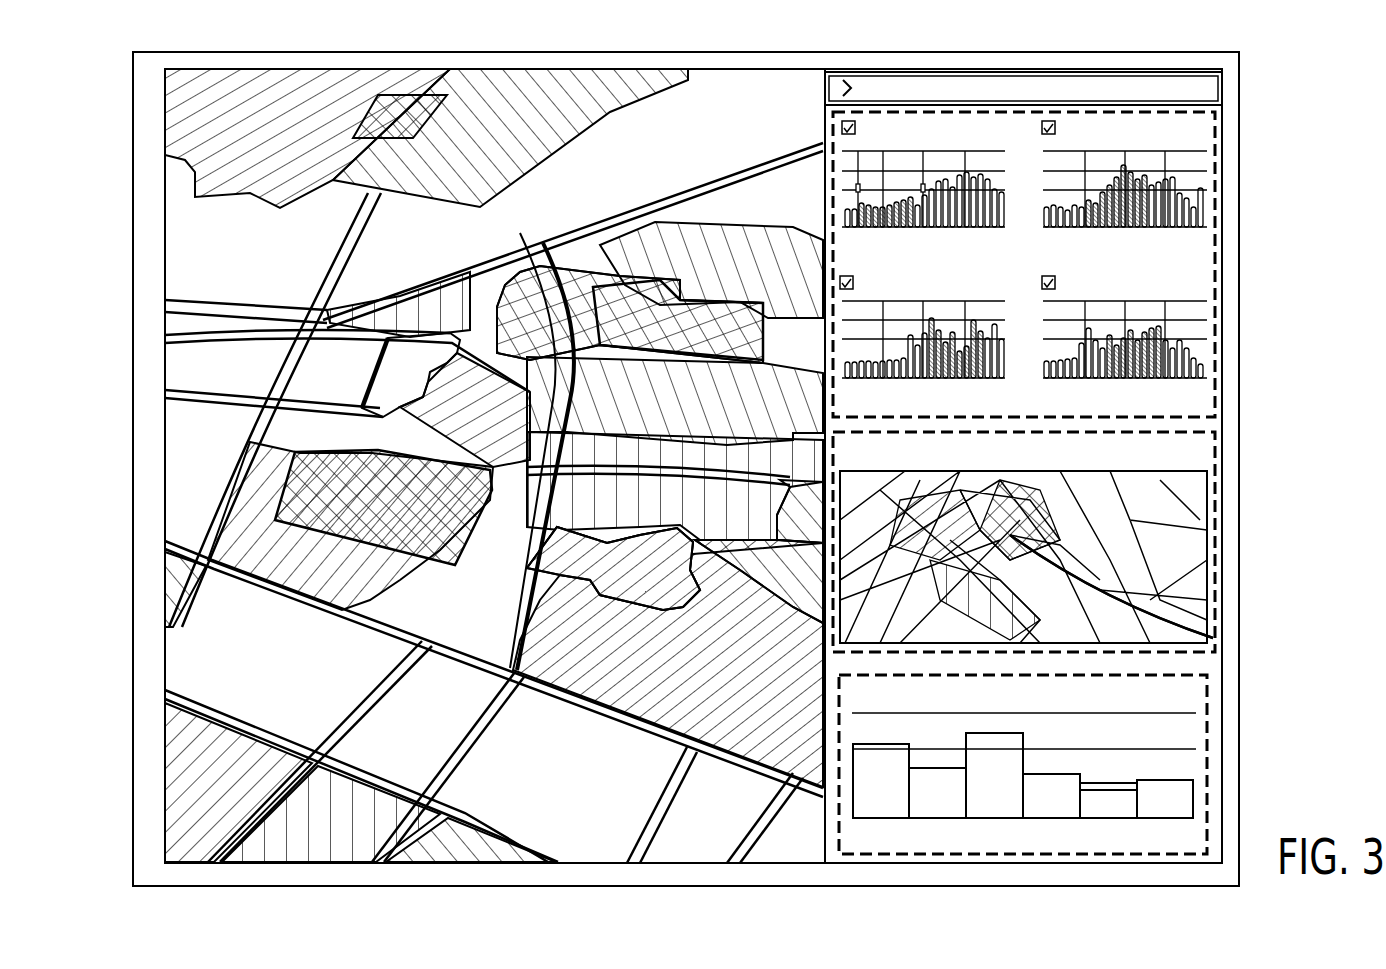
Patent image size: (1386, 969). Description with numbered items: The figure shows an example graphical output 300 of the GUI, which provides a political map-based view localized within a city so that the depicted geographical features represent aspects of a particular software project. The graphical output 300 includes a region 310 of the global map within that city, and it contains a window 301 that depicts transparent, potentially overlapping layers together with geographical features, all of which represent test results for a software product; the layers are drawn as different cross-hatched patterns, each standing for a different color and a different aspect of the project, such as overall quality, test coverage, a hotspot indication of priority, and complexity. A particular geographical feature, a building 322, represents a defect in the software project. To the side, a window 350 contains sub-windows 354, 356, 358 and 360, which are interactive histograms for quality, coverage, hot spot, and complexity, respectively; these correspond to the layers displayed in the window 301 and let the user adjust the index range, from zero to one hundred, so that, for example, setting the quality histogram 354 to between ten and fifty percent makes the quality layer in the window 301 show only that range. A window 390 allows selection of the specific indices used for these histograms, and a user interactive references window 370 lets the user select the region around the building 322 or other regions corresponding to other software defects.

The graphical output 300 is at (883, 40).
The window 301 is at (530, 40).
The region 310 is at (730, 108).
The building 322 is at (165, 339).
The window 350 is at (1217, 265).
The quality histogram sub-window 354 is at (1010, 180).
The coverage histogram sub-window 356 is at (1155, 172).
The hot spot histogram sub-window 358 is at (1007, 330).
The complexity histogram sub-window 360 is at (1155, 322).
The references window 370 is at (1215, 543).
The window 390 is at (1207, 765).